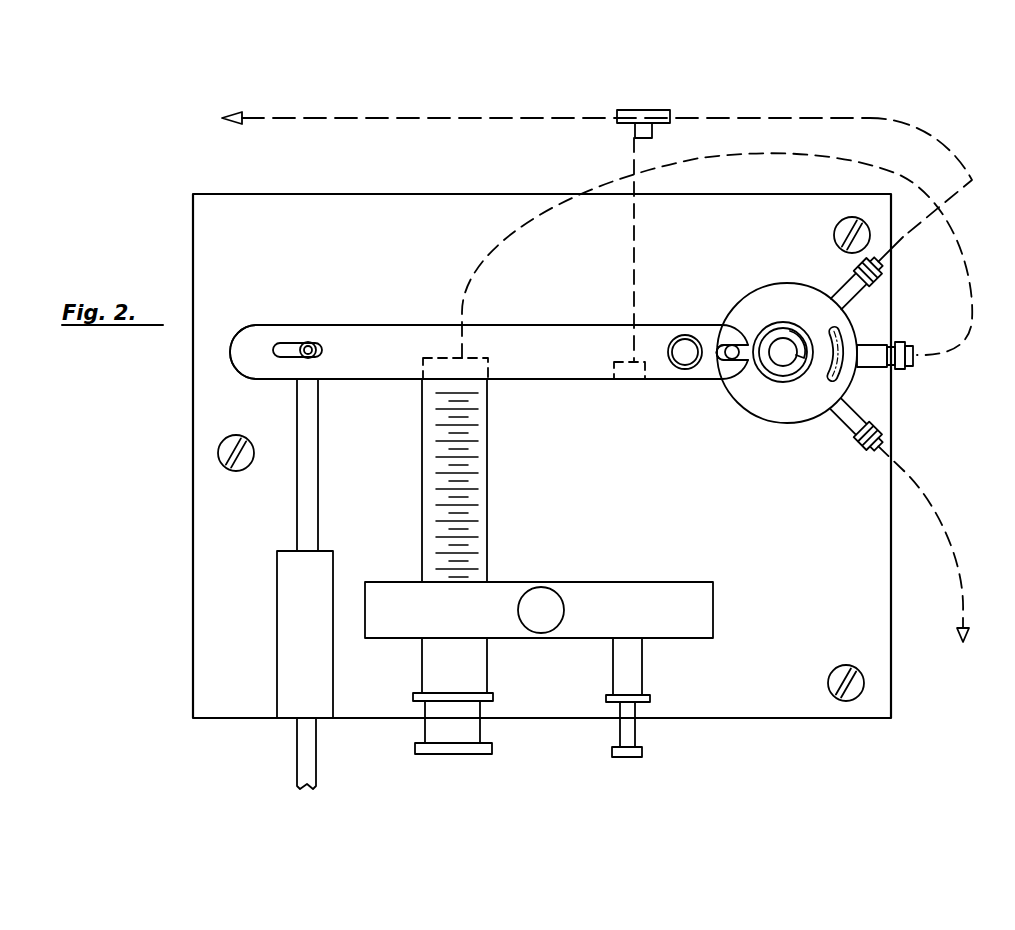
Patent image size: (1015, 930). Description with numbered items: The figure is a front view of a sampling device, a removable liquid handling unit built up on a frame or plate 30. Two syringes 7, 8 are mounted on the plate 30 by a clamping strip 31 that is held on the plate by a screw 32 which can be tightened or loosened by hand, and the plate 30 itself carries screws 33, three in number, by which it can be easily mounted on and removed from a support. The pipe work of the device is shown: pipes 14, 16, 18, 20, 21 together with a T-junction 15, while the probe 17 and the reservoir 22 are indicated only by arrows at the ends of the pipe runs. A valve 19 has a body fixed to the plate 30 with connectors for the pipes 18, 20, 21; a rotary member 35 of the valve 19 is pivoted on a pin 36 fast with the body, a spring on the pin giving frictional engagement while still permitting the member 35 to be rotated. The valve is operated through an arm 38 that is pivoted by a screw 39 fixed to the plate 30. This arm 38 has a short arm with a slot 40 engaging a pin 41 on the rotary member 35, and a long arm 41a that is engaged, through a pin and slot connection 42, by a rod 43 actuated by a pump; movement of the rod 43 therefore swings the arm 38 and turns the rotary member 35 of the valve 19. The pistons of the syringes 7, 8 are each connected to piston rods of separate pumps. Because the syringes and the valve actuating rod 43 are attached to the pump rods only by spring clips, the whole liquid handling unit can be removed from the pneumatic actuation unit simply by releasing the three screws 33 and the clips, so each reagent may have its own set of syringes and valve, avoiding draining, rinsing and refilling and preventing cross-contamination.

The syringe 7 is at (489, 462).
The syringe 8 is at (640, 566).
The pipe 14 is at (636, 298).
The T-junction 15 is at (667, 112).
The pipe 16 is at (370, 114).
The probe 17 is at (236, 113).
The pipe 18 is at (752, 116).
The valve 19 is at (772, 296).
The pipe 20 is at (913, 356).
The pipe 21 is at (955, 545).
The reservoir 22 is at (961, 596).
The plate 30 is at (763, 700).
The clamping strip 31 is at (600, 596).
The screw 32 is at (533, 600).
The screws 33 is at (838, 229).
The rotary member 35 is at (835, 318).
The pin 36 is at (782, 358).
The arm 38 is at (557, 333).
The screw 39 is at (682, 336).
The slot 40 is at (722, 357).
The pin 41 is at (730, 347).
The long arm 41a is at (260, 330).
The pin and slot connection 42 is at (302, 348).
The rod 43 is at (316, 491).